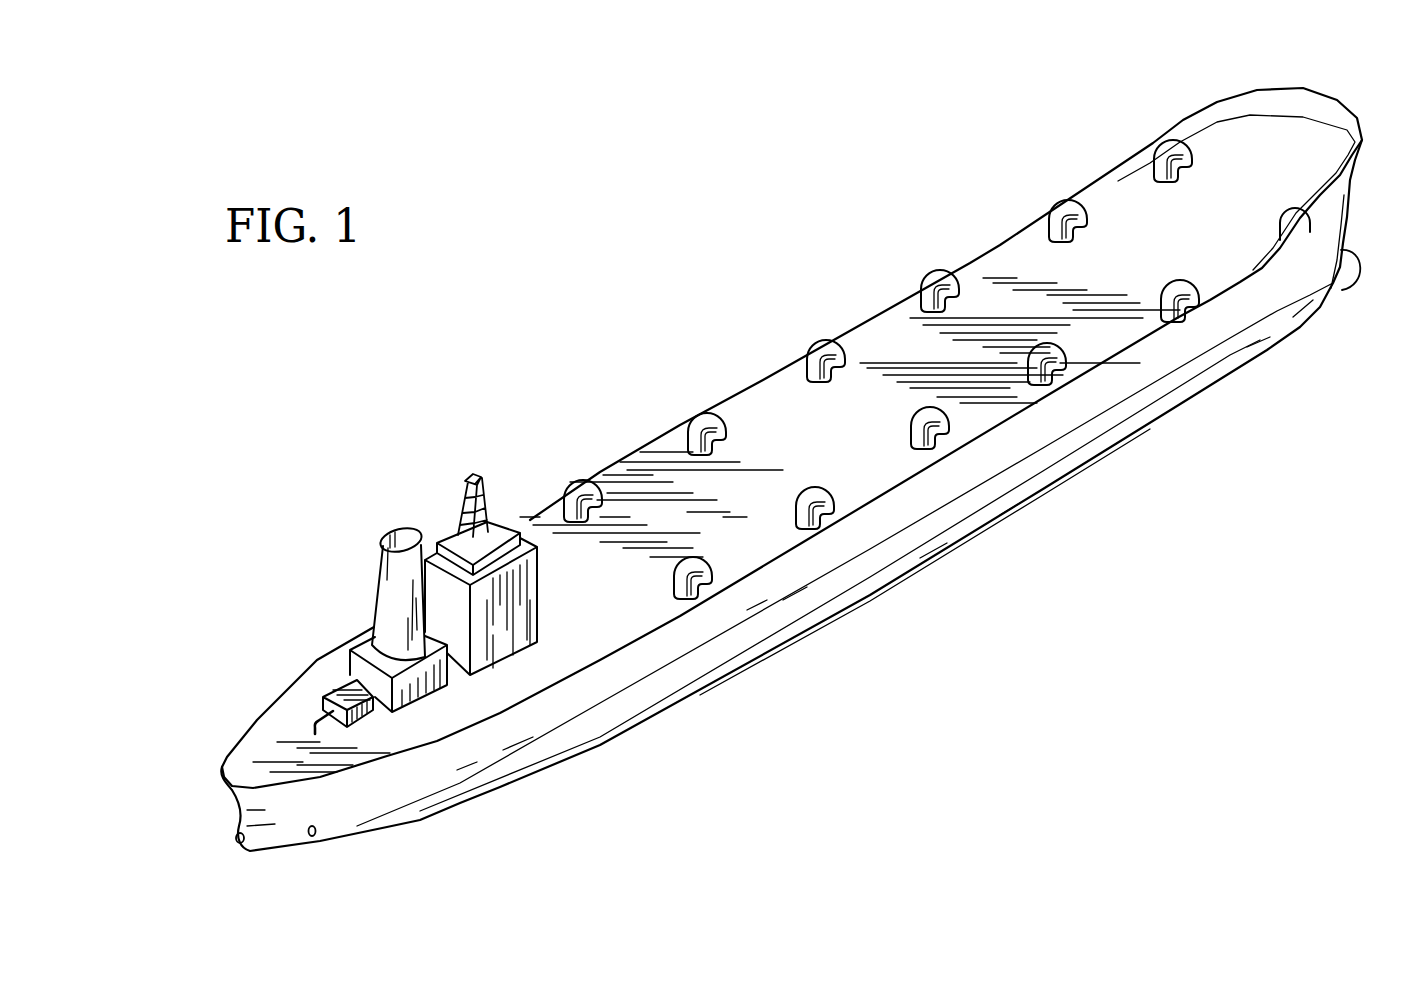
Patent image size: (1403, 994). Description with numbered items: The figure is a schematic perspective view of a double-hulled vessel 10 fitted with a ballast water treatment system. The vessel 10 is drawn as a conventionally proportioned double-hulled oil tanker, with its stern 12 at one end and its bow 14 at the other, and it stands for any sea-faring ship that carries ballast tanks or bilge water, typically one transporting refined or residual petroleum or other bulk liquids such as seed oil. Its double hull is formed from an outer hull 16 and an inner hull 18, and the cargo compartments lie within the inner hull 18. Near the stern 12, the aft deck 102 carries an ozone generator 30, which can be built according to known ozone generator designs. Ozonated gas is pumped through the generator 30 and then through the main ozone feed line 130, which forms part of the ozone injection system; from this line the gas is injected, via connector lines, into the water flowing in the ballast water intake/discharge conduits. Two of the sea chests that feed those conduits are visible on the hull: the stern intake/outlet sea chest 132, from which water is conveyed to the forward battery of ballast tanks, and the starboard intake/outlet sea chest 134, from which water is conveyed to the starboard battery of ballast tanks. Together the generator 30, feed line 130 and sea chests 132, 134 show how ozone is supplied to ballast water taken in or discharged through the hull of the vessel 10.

The vessel 10 is at (670, 342).
The stern 12 is at (228, 732).
The bow 14 is at (1337, 98).
The outer hull 16 is at (874, 574).
The inner hull 18 is at (577, 725).
The ozone generator 30 is at (334, 684).
The aft deck 102 is at (239, 753).
The main ozone feed line 130 is at (318, 718).
The stern intake/outlet sea chest 132 is at (236, 841).
The starboard intake/outlet sea chest 134 is at (316, 836).